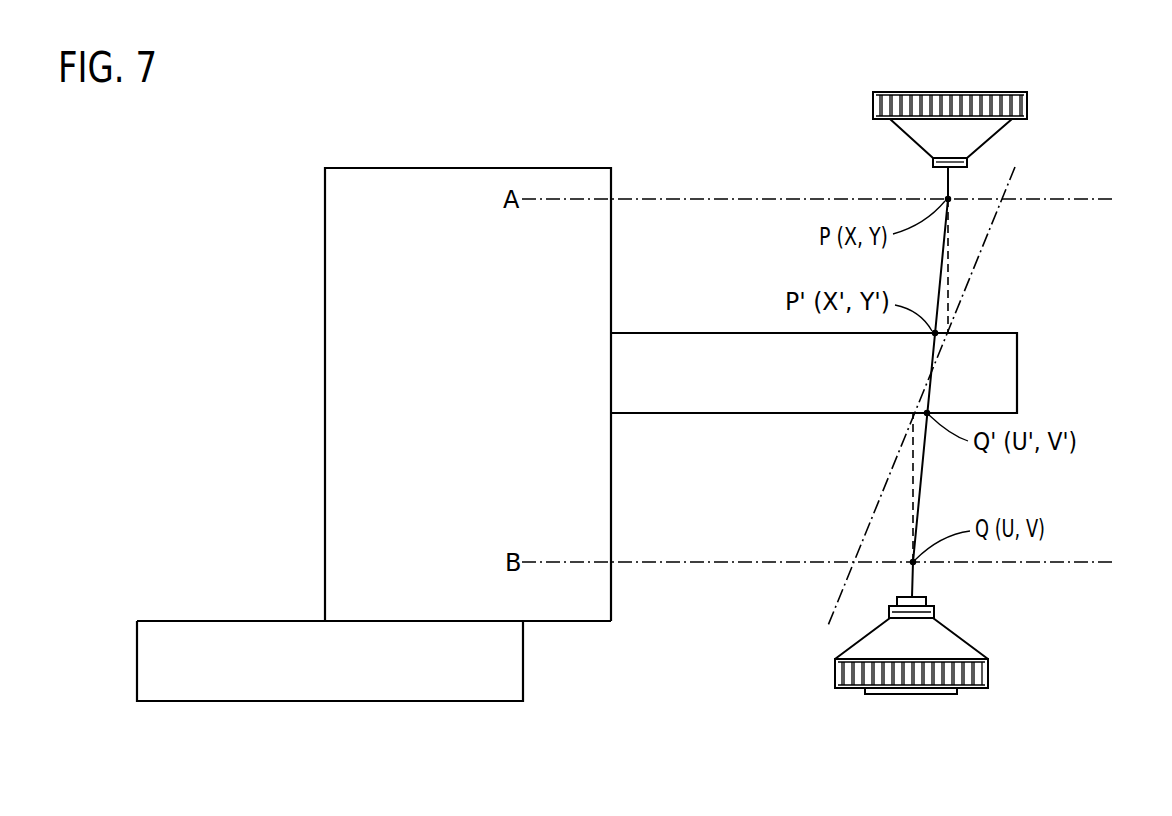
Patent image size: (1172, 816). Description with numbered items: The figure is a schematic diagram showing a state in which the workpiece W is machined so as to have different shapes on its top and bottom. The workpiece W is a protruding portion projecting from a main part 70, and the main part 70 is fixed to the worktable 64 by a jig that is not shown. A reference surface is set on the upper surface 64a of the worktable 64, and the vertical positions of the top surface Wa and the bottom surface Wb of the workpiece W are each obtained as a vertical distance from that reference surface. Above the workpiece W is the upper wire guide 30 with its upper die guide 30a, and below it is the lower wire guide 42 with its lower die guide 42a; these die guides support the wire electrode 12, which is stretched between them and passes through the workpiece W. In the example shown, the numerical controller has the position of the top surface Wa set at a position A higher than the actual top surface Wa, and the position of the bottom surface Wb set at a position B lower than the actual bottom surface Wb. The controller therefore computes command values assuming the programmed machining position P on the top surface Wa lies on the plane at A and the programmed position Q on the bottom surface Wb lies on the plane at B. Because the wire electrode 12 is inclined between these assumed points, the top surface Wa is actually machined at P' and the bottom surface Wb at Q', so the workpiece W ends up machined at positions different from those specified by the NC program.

The wire electrode 12 is at (921, 488).
The upper wire guide 30 is at (998, 133).
The upper die guide 30a is at (935, 161).
The lower wire guide 42 is at (964, 642).
The lower die guide 42a is at (930, 603).
The worktable 64 is at (238, 680).
The upper surface of the worktable 64a is at (187, 620).
The main part 70 is at (375, 268).
The workpiece W is at (992, 377).
The top surface Wa is at (666, 333).
The bottom surface Wb is at (666, 413).